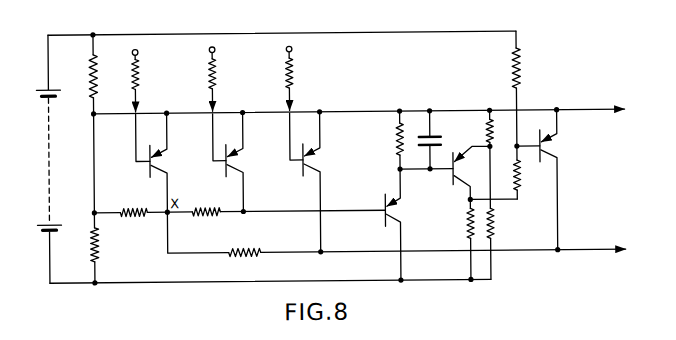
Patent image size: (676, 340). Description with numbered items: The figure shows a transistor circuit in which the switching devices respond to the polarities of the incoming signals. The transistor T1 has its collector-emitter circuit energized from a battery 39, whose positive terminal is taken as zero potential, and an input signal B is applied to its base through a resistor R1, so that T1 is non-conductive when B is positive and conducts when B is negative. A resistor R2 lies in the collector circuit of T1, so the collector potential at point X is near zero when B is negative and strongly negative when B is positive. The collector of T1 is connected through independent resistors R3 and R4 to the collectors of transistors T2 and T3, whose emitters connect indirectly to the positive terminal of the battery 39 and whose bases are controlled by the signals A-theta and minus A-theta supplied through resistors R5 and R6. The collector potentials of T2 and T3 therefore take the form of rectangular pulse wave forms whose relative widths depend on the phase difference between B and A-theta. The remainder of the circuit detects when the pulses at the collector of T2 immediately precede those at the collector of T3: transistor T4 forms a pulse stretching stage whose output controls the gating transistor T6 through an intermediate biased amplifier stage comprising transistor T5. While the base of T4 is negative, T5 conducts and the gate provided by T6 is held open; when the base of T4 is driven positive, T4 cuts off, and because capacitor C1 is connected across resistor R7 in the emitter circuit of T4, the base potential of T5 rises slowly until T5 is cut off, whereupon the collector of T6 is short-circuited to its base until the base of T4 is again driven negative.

The battery 39 is at (79, 171).
The resistor R1 is at (144, 78).
The resistor R2 is at (133, 225).
The resistor R3 is at (206, 225).
The resistor R4 is at (245, 264).
The resistor R5 is at (222, 77).
The resistor R6 is at (302, 76).
The resistor R7 is at (389, 140).
The capacitor C1 is at (436, 140).
The transistor T1 is at (156, 162).
The transistor T2 is at (234, 161).
The transistor T3 is at (311, 182).
The transistor T4 is at (399, 224).
The transistor T5 is at (471, 172).
The transistor T6 is at (542, 180).